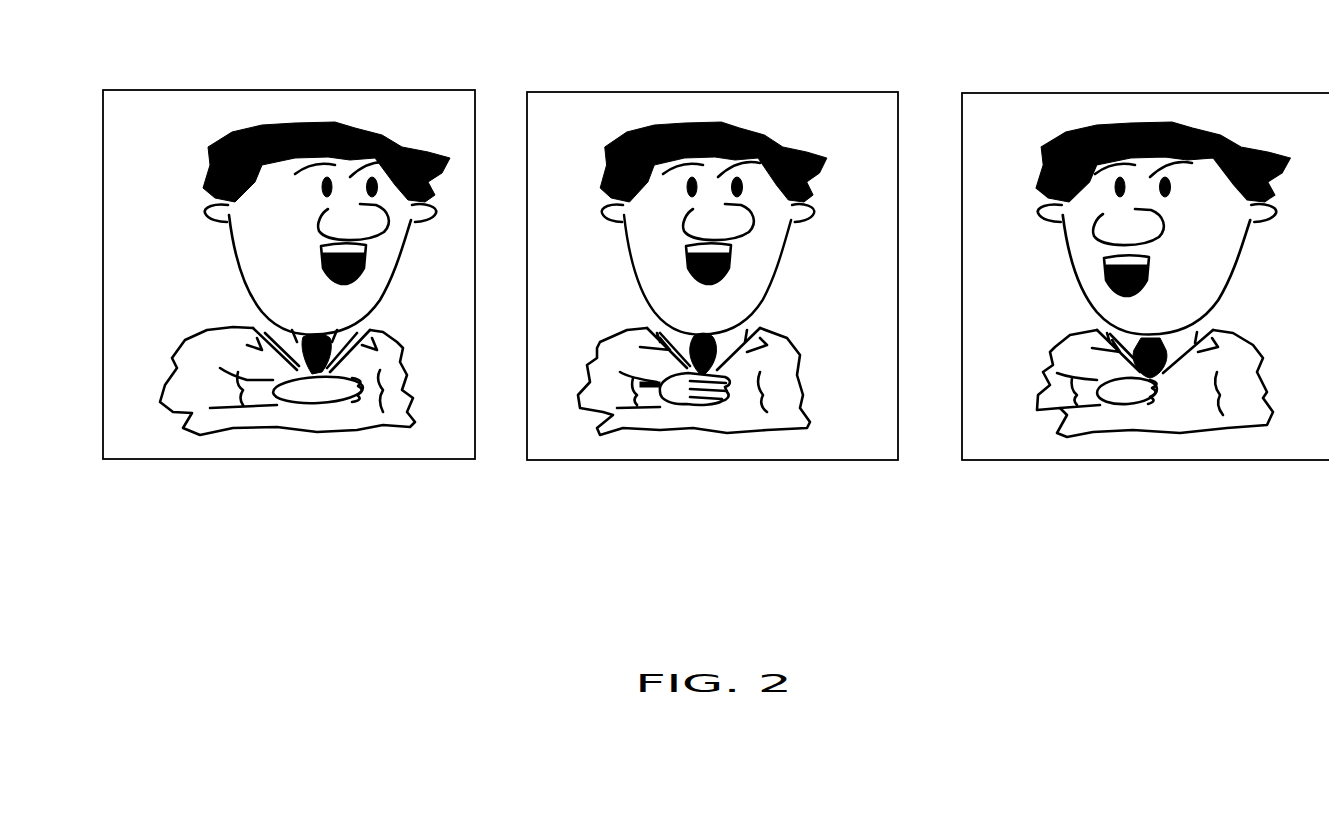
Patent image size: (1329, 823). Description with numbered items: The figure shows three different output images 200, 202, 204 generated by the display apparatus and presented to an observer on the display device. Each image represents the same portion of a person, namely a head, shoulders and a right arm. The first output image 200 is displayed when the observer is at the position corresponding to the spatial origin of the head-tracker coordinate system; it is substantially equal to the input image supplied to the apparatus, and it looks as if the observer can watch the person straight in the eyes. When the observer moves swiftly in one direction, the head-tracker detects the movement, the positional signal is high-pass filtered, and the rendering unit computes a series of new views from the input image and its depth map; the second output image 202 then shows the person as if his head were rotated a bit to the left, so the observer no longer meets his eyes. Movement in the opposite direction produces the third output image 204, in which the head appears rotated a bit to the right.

The first output image 200 is at (672, 103).
The second output image 202 is at (323, 103).
The third output image 204 is at (1150, 107).